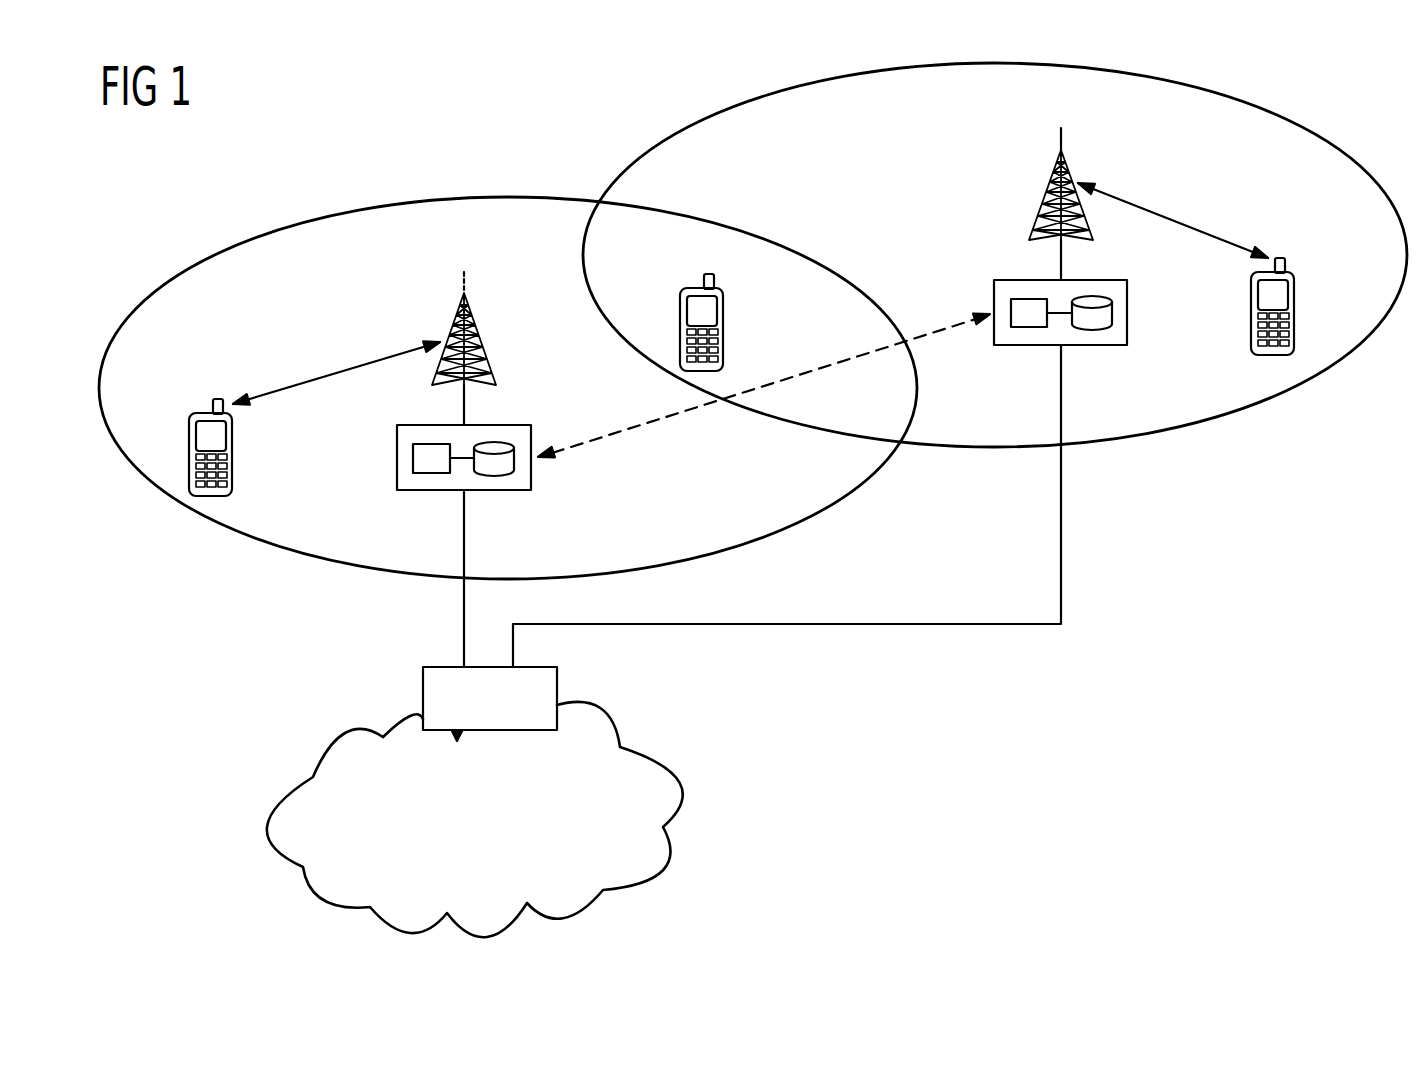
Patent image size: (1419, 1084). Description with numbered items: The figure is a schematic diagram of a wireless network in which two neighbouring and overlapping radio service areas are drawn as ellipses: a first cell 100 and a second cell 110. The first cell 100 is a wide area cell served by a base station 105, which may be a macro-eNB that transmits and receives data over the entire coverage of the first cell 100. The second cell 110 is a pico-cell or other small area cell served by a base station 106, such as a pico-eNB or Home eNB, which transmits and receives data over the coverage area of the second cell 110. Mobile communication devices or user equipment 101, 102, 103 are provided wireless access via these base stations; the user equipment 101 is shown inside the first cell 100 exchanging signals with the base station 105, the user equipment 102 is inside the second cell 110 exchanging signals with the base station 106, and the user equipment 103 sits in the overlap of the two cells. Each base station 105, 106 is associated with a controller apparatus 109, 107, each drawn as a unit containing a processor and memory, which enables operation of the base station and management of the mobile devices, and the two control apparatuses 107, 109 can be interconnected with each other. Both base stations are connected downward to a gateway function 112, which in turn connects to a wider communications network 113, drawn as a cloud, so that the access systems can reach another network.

The first cell 100 is at (505, 197).
The second cell 110 is at (677, 129).
The user equipment 101 is at (234, 452).
The user equipment 102 is at (1296, 312).
The user equipment 103 is at (726, 330).
The base station 105 is at (477, 334).
The base station 106 is at (1045, 190).
The controller apparatus 107 is at (1128, 316).
The controller apparatus 109 is at (398, 470).
The gateway function 112 is at (423, 688).
The communications network 113 is at (268, 822).